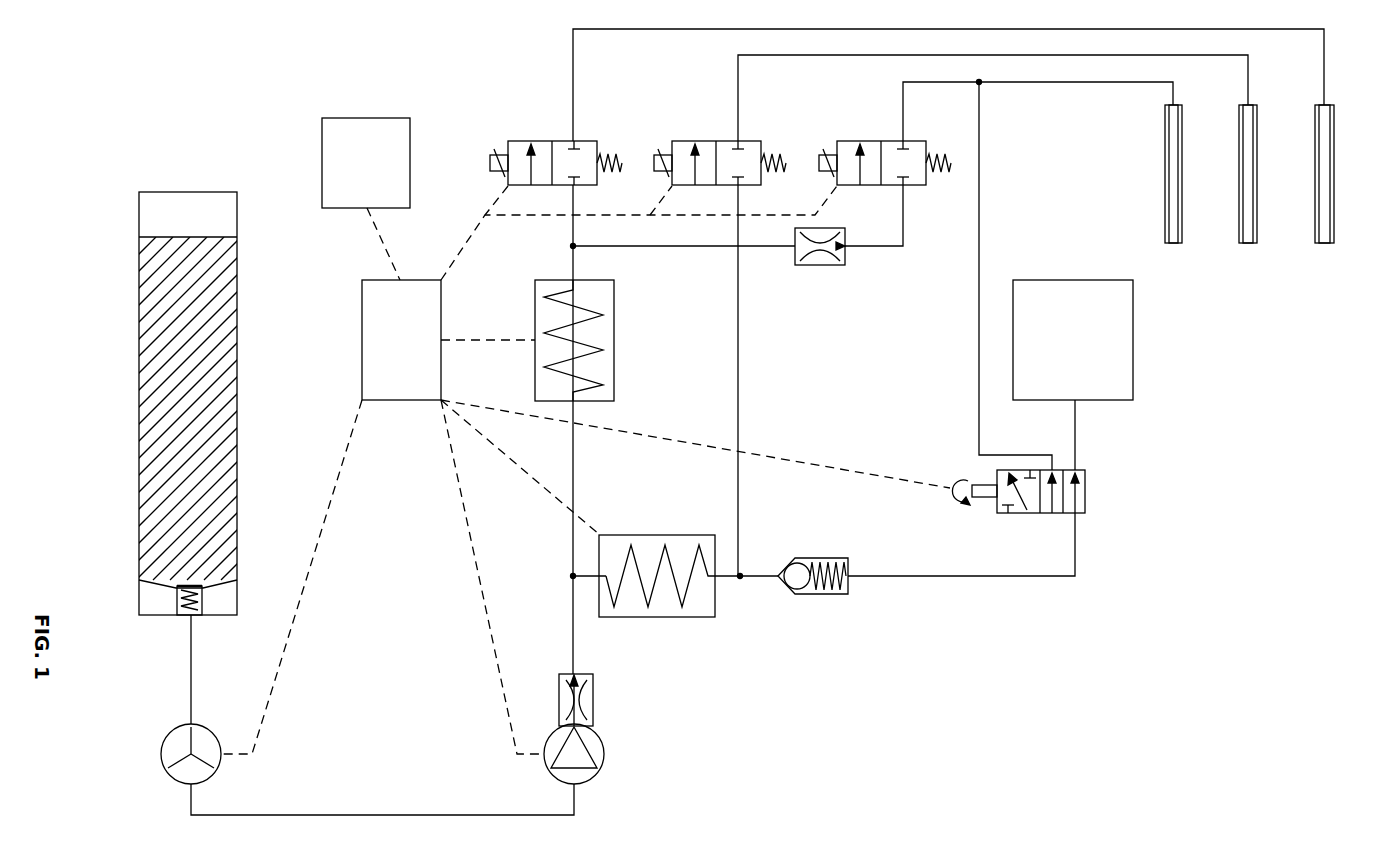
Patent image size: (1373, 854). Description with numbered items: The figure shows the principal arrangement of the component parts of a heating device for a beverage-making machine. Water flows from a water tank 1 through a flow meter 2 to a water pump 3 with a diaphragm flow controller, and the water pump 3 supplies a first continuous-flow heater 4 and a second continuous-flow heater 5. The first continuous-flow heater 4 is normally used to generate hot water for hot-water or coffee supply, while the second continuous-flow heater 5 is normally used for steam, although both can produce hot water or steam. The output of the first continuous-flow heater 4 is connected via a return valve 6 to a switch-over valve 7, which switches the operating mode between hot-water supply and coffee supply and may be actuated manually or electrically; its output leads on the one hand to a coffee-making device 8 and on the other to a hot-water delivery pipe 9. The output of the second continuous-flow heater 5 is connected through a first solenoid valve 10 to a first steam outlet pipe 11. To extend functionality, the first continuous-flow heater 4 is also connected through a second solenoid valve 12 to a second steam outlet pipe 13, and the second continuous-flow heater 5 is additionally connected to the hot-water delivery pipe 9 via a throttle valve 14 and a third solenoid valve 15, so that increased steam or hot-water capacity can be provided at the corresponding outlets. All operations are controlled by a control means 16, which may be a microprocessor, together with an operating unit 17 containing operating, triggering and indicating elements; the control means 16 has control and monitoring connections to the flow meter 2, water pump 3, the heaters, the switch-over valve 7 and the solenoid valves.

The water tank 1 is at (175, 382).
The flow meter 2 is at (178, 743).
The water pump 3 is at (580, 752).
The first continuous-flow heater 4 is at (660, 603).
The second continuous-flow heater 5 is at (598, 368).
The return valve 6 is at (828, 590).
The switch-over valve 7 is at (1085, 493).
The coffee-making device 8 is at (1064, 353).
The hot-water delivery pipe 9 is at (1173, 235).
The first solenoid valve 10 is at (560, 150).
The first steam outlet pipe 11 is at (1322, 235).
The second solenoid valve 12 is at (722, 150).
The second steam outlet pipe 13 is at (1248, 238).
The throttle valve 14 is at (820, 268).
The third solenoid valve 15 is at (890, 152).
The control means 16 is at (388, 358).
The operating unit 17 is at (353, 176).